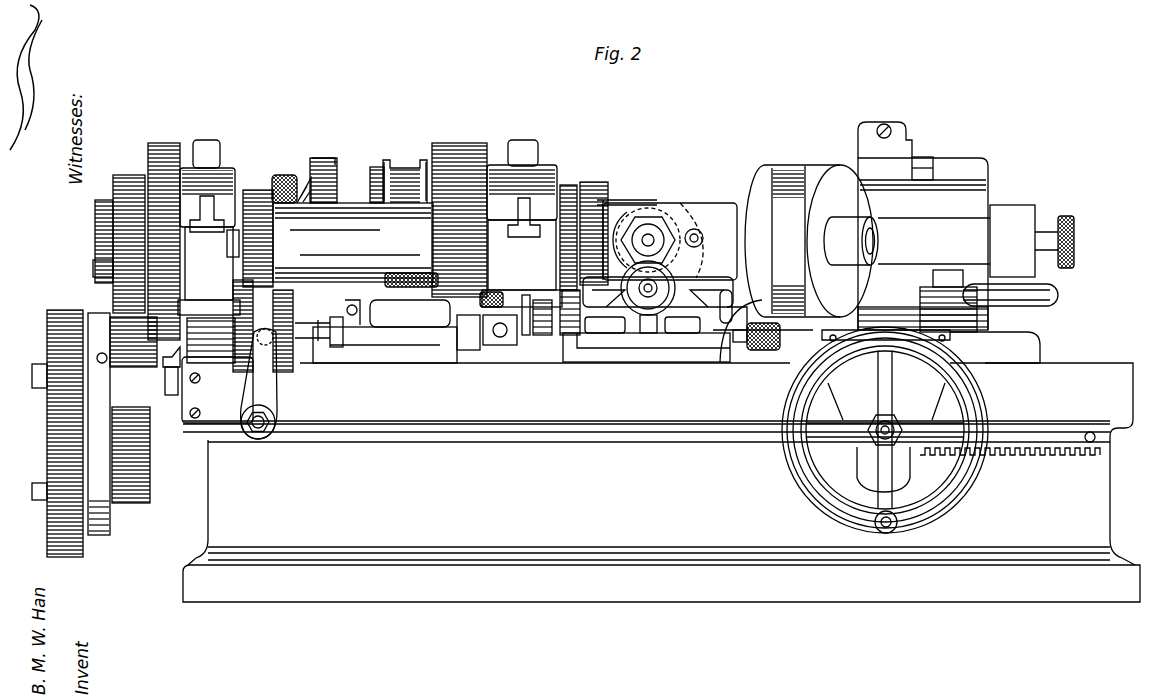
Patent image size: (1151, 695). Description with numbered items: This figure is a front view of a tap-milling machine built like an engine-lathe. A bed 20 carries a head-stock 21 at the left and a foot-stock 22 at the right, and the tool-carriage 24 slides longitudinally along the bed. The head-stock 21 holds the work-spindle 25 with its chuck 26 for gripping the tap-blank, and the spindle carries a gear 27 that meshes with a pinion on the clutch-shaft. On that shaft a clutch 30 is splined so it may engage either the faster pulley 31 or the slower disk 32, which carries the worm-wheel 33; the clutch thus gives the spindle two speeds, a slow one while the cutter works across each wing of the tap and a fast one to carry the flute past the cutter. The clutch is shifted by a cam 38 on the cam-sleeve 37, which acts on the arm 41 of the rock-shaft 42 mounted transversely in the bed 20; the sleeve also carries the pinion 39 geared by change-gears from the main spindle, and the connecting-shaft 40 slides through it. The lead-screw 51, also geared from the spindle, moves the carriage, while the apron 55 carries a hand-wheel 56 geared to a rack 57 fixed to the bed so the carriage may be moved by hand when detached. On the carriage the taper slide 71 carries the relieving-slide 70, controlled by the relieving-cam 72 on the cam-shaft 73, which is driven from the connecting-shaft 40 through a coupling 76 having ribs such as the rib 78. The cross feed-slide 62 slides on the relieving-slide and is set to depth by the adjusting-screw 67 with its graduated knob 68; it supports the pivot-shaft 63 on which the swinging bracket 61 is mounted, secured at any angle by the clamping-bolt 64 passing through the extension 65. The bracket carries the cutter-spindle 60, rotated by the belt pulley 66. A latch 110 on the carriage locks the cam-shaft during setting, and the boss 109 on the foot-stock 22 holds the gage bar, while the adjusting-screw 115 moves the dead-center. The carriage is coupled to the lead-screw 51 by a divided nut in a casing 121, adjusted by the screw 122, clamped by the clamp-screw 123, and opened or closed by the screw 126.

The bed 20 is at (661, 482).
The head-stock 21 is at (370, 251).
The foot-stock 22 is at (958, 245).
The tool-carriage 24 is at (606, 356).
The work-spindle 25 is at (338, 238).
The chuck 26 is at (597, 185).
The gear 27 is at (458, 143).
The clutch 30 is at (376, 170).
The pulley 31 is at (406, 160).
The disk 32 is at (325, 158).
The worm-wheel 33 is at (281, 175).
The cam-sleeve 37 is at (292, 360).
The cam 38 is at (237, 373).
The pinion 39 is at (118, 325).
The connecting-shaft 40 is at (453, 355).
The arm 41 is at (270, 402).
The rock-shaft 42 is at (262, 440).
The lead-screw 51 is at (32, 378).
The apron 55 is at (923, 419).
The hand-wheel 56 is at (790, 480).
The rack 57 is at (1050, 458).
The cutter-spindle 60 is at (876, 246).
The swinging bracket 61 is at (728, 205).
The cross feed-slide 62 is at (707, 288).
The pivot-shaft 63 is at (652, 237).
The clamping-bolt 64 is at (696, 233).
The extension 65 is at (687, 200).
The pulley 66 is at (811, 168).
The adjusting-screw 67 is at (652, 300).
The knob 68 is at (636, 322).
The relieving-slide 70 is at (708, 320).
The taper slide 71 is at (590, 342).
The relieving-cam 72 is at (646, 300).
The cam-shaft 73 is at (763, 352).
The coupling 76 is at (544, 340).
The driving rib 78 is at (539, 300).
The boss 109 is at (914, 140).
The latch 110 is at (514, 340).
The adjusting-screw 115 is at (1076, 245).
The casing 121 is at (397, 335).
The screw 122 is at (340, 347).
The clamp-screw 123 is at (497, 293).
The screw 126 is at (411, 273).